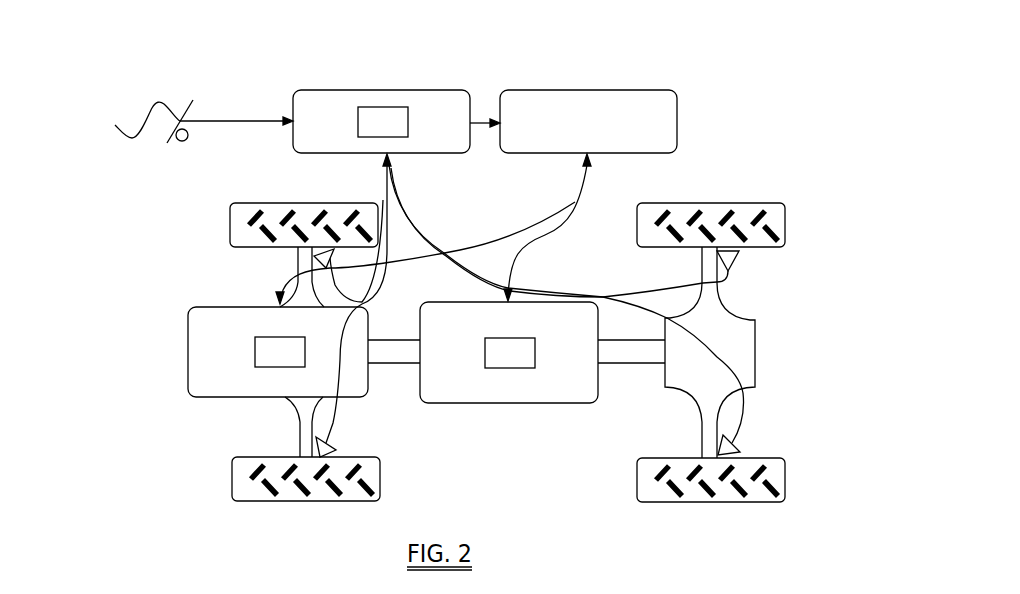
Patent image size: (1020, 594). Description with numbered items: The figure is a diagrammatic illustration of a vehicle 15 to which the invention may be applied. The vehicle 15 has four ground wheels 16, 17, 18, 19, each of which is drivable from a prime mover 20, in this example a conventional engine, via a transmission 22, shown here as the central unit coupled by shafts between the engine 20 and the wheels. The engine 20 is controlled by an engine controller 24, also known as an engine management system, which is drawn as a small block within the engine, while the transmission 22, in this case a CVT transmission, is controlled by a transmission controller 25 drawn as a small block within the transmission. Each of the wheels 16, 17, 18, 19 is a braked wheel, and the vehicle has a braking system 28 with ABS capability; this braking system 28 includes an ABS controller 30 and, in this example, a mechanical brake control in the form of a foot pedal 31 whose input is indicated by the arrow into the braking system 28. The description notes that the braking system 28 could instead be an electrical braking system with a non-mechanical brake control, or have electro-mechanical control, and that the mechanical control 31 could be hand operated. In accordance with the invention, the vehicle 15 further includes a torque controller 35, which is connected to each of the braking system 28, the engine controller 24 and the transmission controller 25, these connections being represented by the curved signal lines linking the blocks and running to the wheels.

The vehicle 15 is at (713, 168).
The ground wheel 16 is at (232, 218).
The ground wheel 17 is at (785, 213).
The ground wheel 18 is at (250, 494).
The ground wheel 19 is at (648, 490).
The prime mover 20 is at (210, 388).
The transmission 22 is at (468, 397).
The engine controller 24 is at (253, 348).
The transmission controller 25 is at (536, 358).
The braking system 28 is at (294, 94).
The ABS controller 30 is at (396, 138).
The foot pedal 31 is at (193, 121).
The torque controller 35 is at (665, 102).